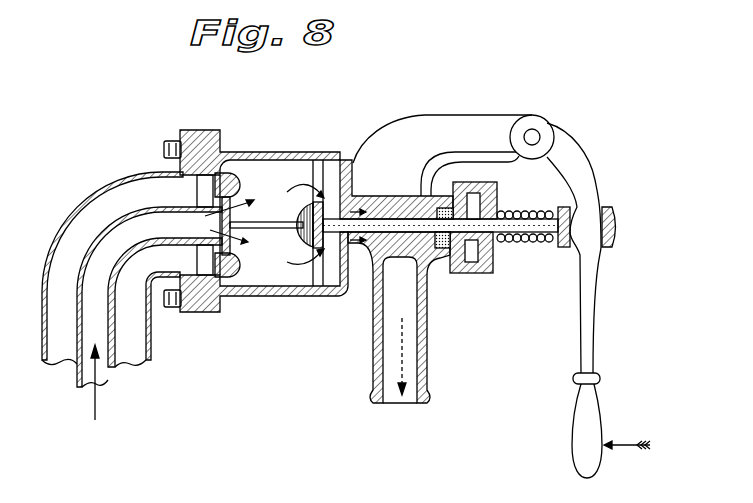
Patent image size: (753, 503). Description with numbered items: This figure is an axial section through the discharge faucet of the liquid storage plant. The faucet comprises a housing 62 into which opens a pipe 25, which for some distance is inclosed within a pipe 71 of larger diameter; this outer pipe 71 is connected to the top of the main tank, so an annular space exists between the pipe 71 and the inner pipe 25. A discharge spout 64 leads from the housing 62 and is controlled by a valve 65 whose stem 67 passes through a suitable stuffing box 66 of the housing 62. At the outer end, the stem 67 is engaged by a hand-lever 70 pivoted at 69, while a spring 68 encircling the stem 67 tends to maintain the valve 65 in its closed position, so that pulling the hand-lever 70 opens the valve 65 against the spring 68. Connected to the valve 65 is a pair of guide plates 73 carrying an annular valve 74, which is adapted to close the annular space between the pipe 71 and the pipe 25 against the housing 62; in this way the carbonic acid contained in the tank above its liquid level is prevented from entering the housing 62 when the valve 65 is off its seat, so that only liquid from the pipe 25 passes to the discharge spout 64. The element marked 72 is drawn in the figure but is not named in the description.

The pipe 25 is at (103, 373).
The housing 62 is at (327, 163).
The discharge spout 64 is at (413, 340).
The valve 65 is at (323, 262).
The stuffing box 66 is at (467, 273).
The stem 67 is at (512, 227).
The spring 68 is at (545, 247).
The pivot 69 is at (534, 136).
The hand-lever 70 is at (587, 298).
The pipe 71 is at (77, 220).
The valve seat collar 72 is at (203, 263).
The guide plates 73 is at (260, 273).
The annular valve 74 is at (230, 186).